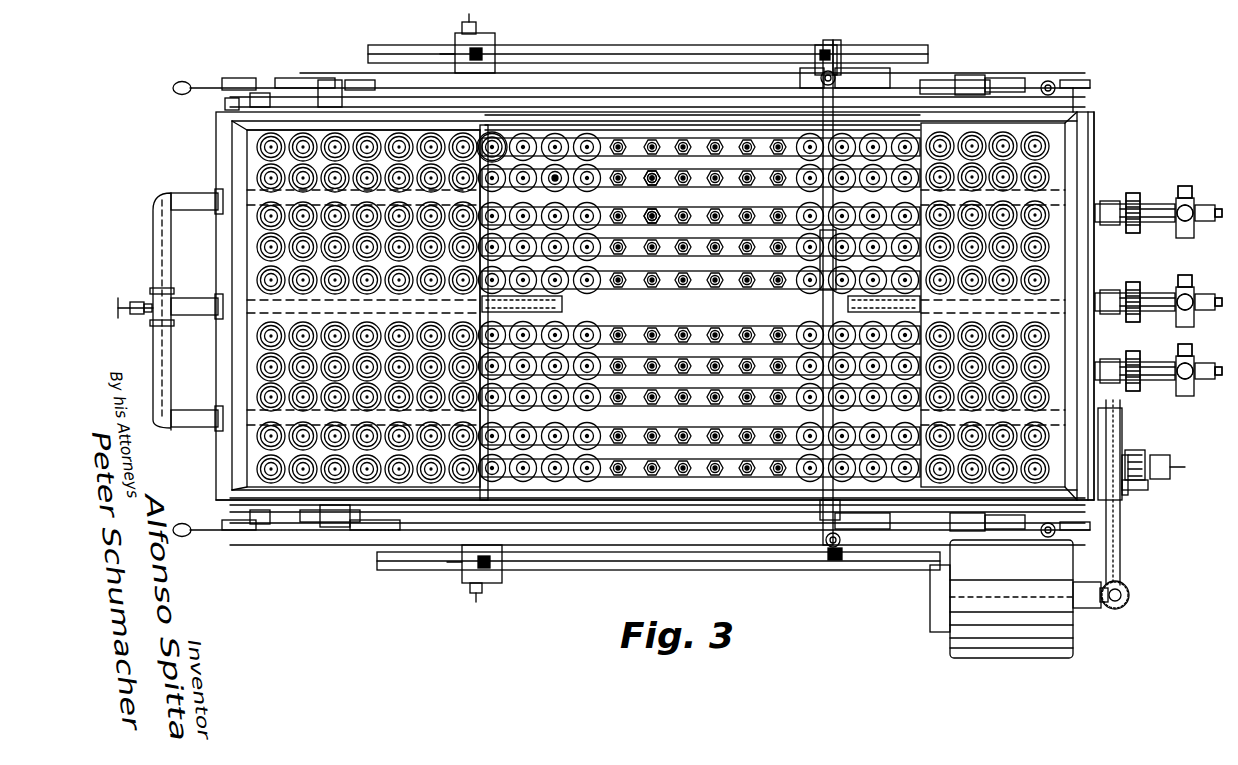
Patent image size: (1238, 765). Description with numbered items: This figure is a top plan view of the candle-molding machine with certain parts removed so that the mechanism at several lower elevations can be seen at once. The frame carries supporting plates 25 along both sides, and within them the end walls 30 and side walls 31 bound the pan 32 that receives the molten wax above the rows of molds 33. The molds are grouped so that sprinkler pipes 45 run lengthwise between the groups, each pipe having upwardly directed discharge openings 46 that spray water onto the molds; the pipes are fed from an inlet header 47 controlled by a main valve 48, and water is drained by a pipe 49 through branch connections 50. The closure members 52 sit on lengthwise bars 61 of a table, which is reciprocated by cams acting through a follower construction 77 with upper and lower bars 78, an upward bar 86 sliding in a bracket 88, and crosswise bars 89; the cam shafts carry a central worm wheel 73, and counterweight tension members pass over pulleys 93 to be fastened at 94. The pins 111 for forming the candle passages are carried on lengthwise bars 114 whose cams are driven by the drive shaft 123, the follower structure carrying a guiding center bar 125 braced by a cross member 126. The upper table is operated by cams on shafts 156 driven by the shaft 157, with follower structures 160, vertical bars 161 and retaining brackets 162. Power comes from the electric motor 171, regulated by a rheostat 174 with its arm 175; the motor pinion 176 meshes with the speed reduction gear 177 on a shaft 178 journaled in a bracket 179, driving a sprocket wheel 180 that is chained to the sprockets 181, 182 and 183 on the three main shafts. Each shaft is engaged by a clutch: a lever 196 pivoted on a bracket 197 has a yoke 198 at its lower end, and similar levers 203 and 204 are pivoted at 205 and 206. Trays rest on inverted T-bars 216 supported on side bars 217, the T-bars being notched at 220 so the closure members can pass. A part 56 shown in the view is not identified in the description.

The supporting plates 25 is at (600, 100).
The end walls 30 is at (243, 458).
The side walls 31 is at (290, 492).
The pan 32 is at (252, 160).
The molds 33 is at (365, 340).
The sprinkler pipes 45 is at (200, 196).
The discharge openings 46 is at (562, 304).
The inlet header 47 is at (153, 245).
The main valve 48 is at (115, 312).
The drain pipe 49 is at (250, 86).
The branch connections 50 is at (328, 80).
The closure members 52 is at (510, 215).
The block 56 is at (828, 575).
The bars 61 is at (568, 185).
The central worm wheel 73 is at (1218, 302).
The follower construction 77 is at (955, 84).
The upper and lower bars 78 is at (640, 80).
The bar 86 is at (802, 75).
The bracket 88 is at (862, 85).
The crosswise bars 89 is at (826, 72).
The pulleys 93 is at (222, 87).
The fastening point 94 is at (262, 92).
The pins 111 is at (668, 215).
The bars 114 is at (672, 262).
The drive shaft 123 is at (1218, 218).
The center bar 125 is at (355, 80).
The cross member 126 is at (300, 76).
The shafts 156 is at (835, 40).
The shaft 157 is at (1218, 376).
The follower structures 160 is at (402, 41).
The vertical bars 161 is at (485, 55).
The brackets 162 is at (468, 38).
The electric motor 171 is at (1019, 599).
The rheostat 174 is at (1120, 442).
The arm 175 is at (1128, 500).
The pinion 176 is at (1115, 610).
The speed reduction gear 177 is at (1121, 565).
The shaft 178 is at (1170, 470).
The bracket 179 is at (1150, 492).
The sprocket wheel 180 is at (1138, 453).
The sprocket 181 is at (1132, 282).
The sprocket 182 is at (1132, 193).
The sprocket 183 is at (1132, 352).
The lever 196 is at (1188, 363).
The bracket 197 is at (1160, 362).
The yoke 198 is at (1188, 232).
The lever 203 is at (1190, 293).
The lever 204 is at (1188, 203).
The pivot 205 is at (1152, 293).
The pivot 206 is at (1152, 204).
The inverted T-bars 216 is at (822, 296).
The bars 217 is at (690, 120).
The notches 220 is at (822, 195).